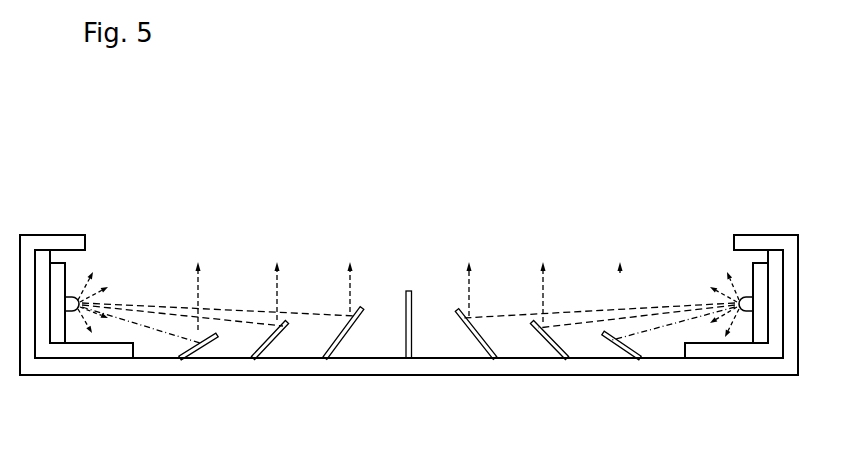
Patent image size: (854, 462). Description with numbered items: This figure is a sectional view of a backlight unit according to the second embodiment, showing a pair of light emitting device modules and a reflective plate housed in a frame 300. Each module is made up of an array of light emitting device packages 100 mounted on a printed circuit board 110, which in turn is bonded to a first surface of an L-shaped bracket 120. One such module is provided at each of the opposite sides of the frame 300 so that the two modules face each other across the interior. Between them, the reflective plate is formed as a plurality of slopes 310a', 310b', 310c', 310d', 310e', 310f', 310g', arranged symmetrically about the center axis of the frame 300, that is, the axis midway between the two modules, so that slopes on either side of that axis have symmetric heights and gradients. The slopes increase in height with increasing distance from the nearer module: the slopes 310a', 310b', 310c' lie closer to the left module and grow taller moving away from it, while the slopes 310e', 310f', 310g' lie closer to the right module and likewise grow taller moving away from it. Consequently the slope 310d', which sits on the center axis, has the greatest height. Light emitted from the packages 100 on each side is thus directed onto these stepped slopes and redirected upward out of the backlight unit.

The light emitting device package 100 is at (72, 296).
The printed circuit board 110 is at (58, 340).
The bracket 120 is at (115, 350).
The frame 300 is at (782, 240).
The slope 310a' is at (201, 346).
The slope 310b' is at (275, 346).
The slope 310c' is at (348, 346).
The slope 310d' is at (415, 361).
The slope 310e' is at (472, 346).
The slope 310f' is at (543, 346).
The slope 310g' is at (617, 346).